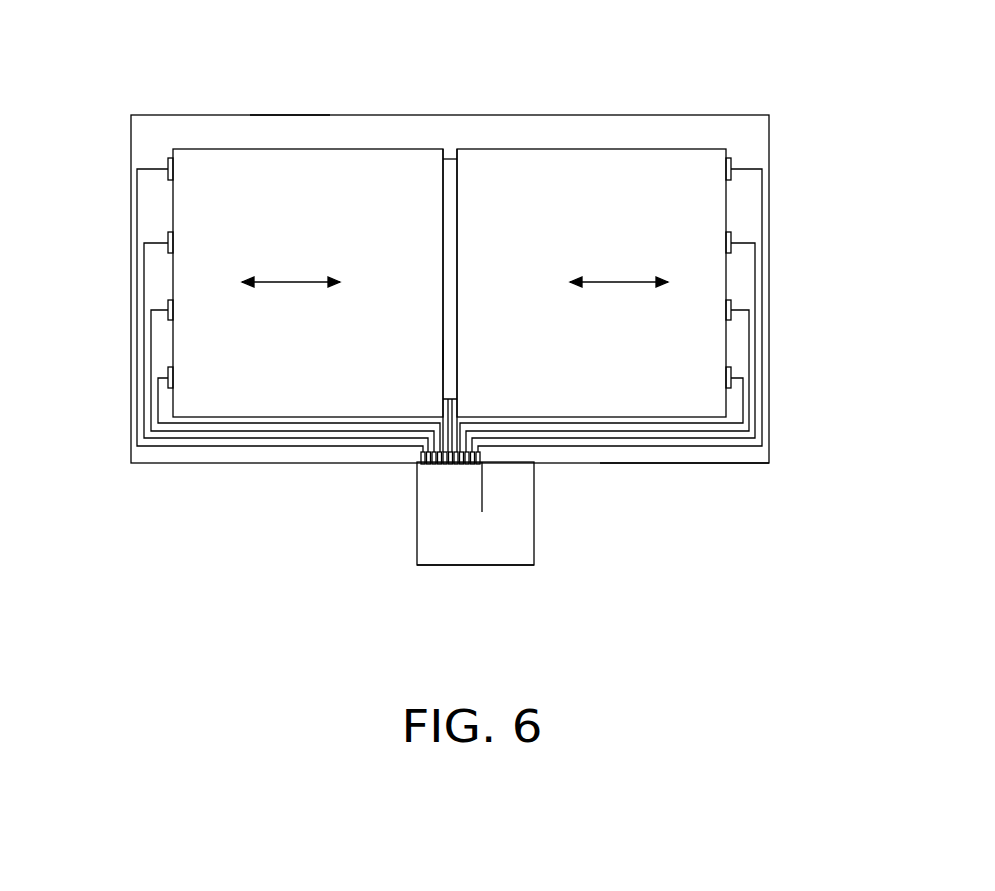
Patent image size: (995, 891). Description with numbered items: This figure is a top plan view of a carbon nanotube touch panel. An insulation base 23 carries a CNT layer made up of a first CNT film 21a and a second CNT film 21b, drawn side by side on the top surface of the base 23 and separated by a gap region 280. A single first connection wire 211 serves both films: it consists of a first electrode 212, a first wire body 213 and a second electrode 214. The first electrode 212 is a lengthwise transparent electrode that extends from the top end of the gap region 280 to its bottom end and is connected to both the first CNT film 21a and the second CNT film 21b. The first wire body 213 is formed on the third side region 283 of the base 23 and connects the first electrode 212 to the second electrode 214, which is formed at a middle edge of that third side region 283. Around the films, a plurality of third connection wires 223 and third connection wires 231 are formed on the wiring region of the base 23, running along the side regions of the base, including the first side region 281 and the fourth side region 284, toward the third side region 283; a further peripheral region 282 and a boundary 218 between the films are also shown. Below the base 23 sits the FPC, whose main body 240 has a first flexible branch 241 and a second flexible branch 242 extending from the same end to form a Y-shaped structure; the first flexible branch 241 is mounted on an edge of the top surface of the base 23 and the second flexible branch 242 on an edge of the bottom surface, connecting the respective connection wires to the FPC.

The first CNT film 21a is at (358, 148).
The second CNT film 21b is at (632, 148).
The base 23 is at (682, 115).
The gap 218 is at (443, 195).
The gap region 280 is at (453, 157).
The fourth side region 284 is at (288, 133).
The third connection wires 223 is at (138, 204).
The first side region 281 is at (160, 292).
The third connection wires 231 is at (755, 265).
The conductive trace 282 is at (737, 345).
The third side region 283 is at (670, 455).
The first connection wire 211 is at (388, 541).
The first electrode 212 is at (443, 355).
The first wire body 213 is at (443, 407).
The second electrode 214 is at (421, 452).
The main body 240 is at (510, 565).
The first flexible branch 241 is at (464, 485).
The second flexible branch 242 is at (518, 485).